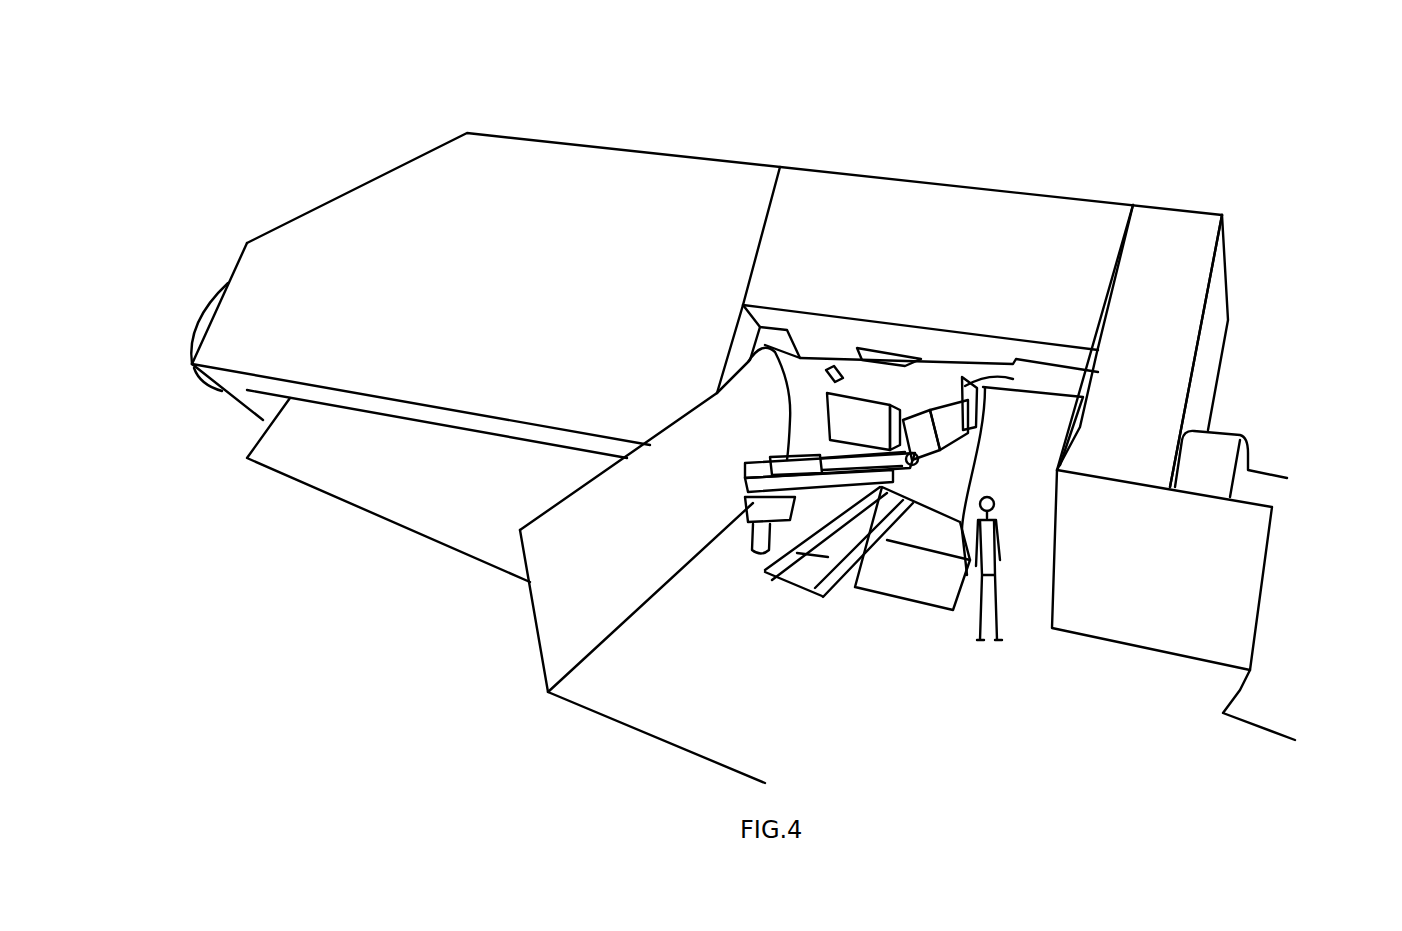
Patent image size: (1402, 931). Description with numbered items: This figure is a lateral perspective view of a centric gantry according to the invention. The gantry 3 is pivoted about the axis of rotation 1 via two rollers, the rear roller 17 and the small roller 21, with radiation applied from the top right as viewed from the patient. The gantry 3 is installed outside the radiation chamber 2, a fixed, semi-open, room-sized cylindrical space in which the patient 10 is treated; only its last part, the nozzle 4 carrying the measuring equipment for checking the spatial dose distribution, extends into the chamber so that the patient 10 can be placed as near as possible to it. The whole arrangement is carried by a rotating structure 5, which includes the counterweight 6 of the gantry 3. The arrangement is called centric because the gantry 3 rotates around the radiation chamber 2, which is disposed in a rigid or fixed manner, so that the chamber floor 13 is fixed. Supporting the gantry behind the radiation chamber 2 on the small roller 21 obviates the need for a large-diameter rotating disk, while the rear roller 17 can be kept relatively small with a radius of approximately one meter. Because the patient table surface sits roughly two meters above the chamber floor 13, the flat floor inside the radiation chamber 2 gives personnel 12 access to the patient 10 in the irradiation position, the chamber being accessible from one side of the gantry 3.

The axis of rotation 1 is at (190, 331).
The rear roller 17 is at (212, 306).
The rotating structure 5 is at (650, 182).
The gantry 3 is at (927, 208).
The nozzle 4 is at (917, 397).
The counterweight 6 is at (1162, 233).
The small roller 21 is at (1213, 463).
The radiation chamber 2 is at (1017, 467).
The patient 10 is at (847, 450).
The chamber floor 13 is at (893, 664).
The personnel 12 is at (1003, 543).